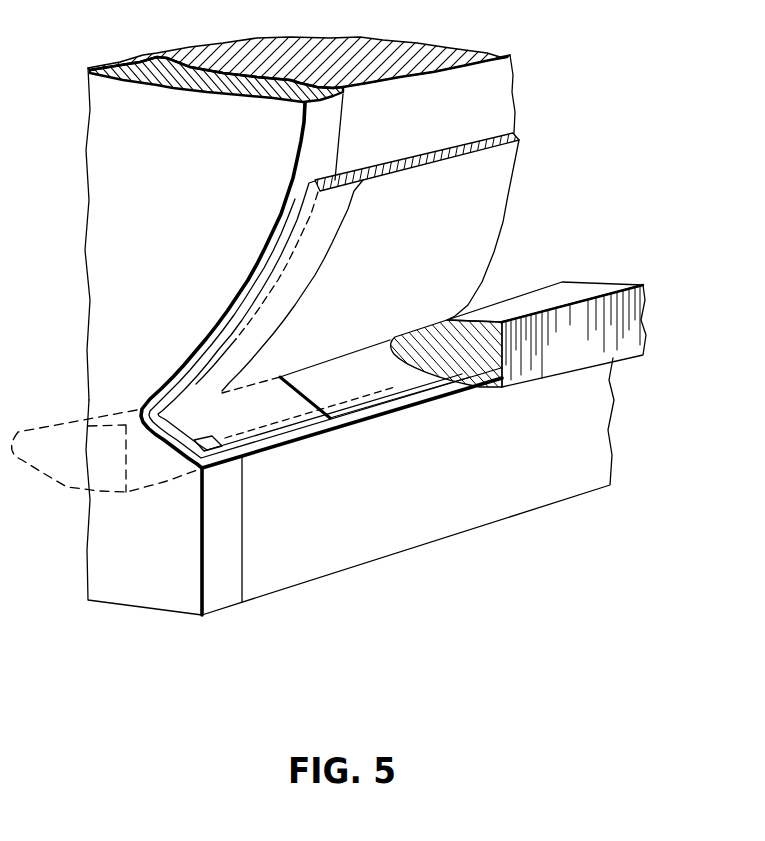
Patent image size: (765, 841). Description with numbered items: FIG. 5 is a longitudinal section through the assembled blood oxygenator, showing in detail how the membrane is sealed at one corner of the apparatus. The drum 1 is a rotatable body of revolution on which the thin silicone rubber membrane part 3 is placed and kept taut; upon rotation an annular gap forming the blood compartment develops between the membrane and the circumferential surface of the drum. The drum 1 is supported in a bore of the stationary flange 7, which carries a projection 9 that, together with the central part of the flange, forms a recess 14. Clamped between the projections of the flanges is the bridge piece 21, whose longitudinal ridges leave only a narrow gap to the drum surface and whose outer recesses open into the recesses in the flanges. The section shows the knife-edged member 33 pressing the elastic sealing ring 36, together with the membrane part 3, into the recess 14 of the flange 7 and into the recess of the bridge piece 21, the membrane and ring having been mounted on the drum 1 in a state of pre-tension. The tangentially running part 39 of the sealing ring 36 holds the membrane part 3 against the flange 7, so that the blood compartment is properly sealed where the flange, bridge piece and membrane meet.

The drum 1 is at (492, 84).
The membrane part 3 is at (491, 173).
The flange 7 is at (110, 148).
The projection 9 is at (142, 585).
The recess 14 is at (136, 411).
The bridge piece 21 is at (395, 538).
The knife-edged member 33 is at (585, 291).
The sealing ring 36 is at (363, 392).
The tangentially running part 39 is at (323, 248).